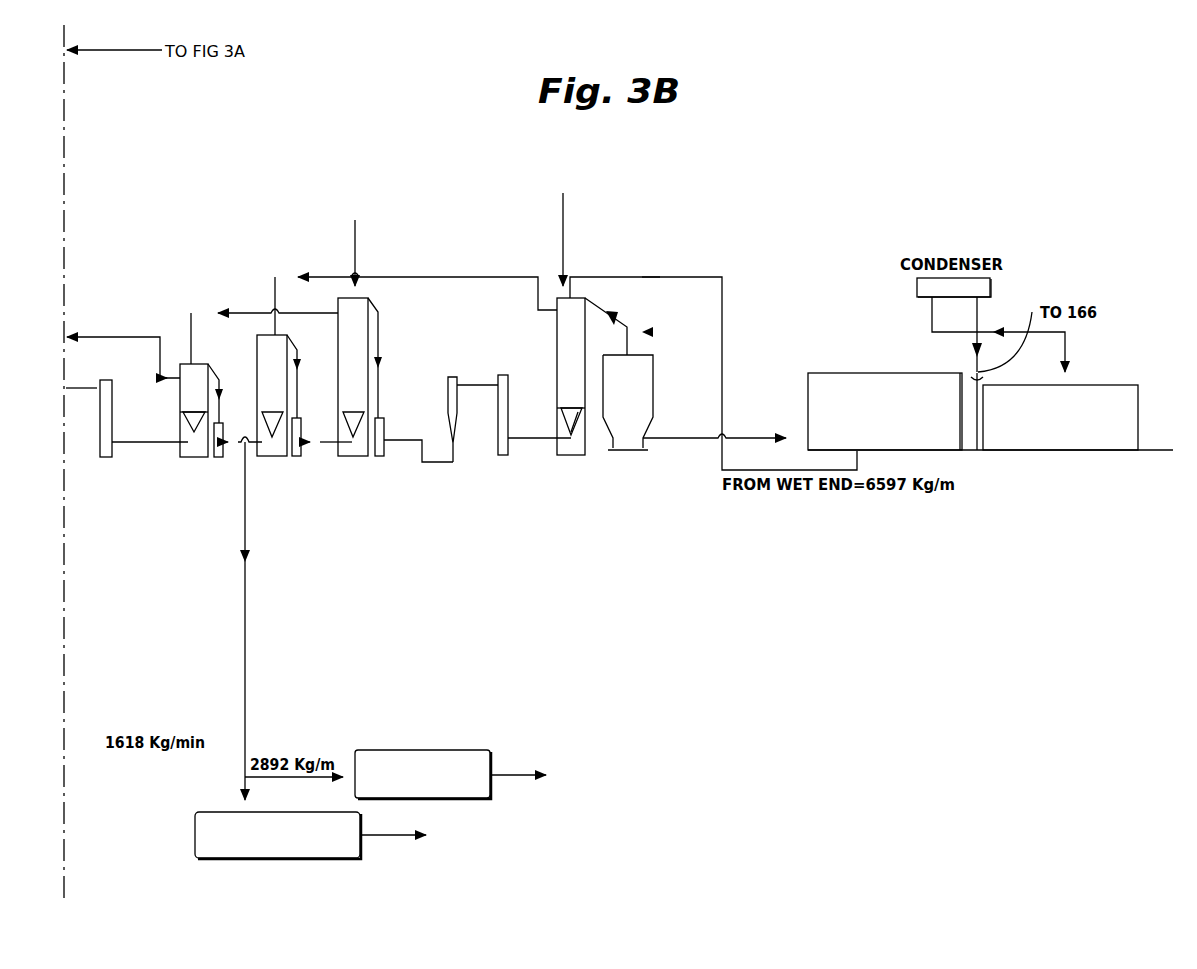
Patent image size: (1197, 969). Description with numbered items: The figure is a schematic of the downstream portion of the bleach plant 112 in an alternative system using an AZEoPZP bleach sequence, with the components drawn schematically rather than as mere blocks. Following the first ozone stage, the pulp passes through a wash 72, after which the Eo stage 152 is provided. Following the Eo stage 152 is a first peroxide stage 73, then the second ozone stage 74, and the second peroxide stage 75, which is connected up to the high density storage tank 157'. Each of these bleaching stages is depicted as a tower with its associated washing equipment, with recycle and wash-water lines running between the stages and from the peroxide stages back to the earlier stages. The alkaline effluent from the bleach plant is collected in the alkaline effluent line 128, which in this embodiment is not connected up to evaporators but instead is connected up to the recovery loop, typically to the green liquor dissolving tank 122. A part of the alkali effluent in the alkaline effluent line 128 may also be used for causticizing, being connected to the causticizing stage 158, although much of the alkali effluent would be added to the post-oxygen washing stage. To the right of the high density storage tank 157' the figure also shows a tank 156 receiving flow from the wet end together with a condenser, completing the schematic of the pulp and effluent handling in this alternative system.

The bleach plant 112 is at (130, 302).
The wash 72 is at (180, 404).
The Eo stage 152 is at (278, 400).
The first peroxide stage 73 is at (362, 367).
The second ozone stage 74 is at (449, 395).
The second peroxide stage 75 is at (568, 343).
The high density storage tank 157' is at (655, 398).
The paper machine tank 156 is at (790, 393).
The alkaline effluent line 128 is at (245, 618).
The causticizing stage 158 is at (408, 750).
The green liquor dissolving tank 122 is at (207, 811).